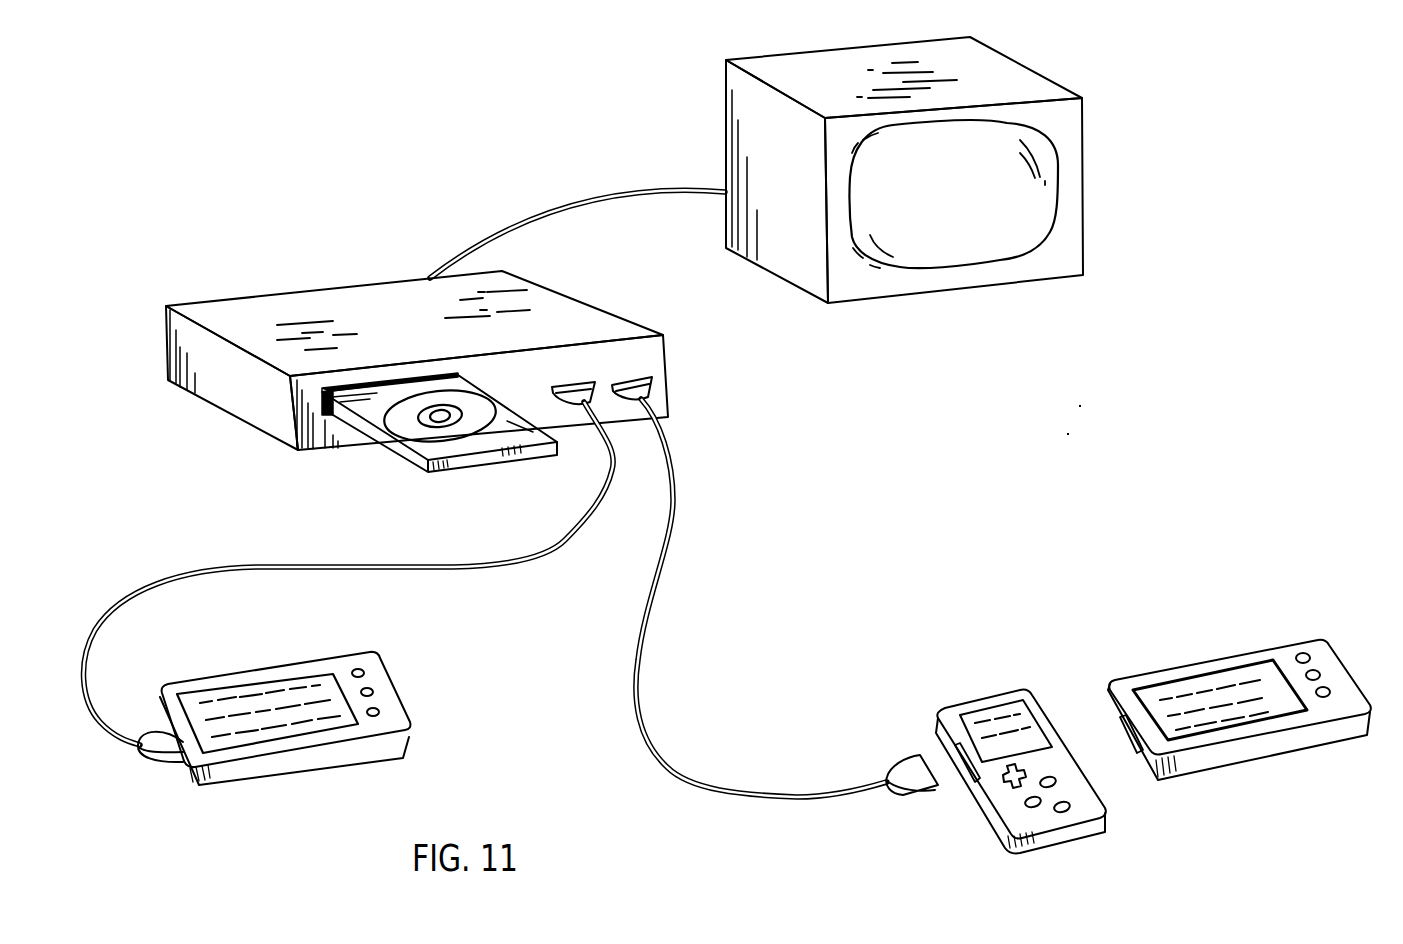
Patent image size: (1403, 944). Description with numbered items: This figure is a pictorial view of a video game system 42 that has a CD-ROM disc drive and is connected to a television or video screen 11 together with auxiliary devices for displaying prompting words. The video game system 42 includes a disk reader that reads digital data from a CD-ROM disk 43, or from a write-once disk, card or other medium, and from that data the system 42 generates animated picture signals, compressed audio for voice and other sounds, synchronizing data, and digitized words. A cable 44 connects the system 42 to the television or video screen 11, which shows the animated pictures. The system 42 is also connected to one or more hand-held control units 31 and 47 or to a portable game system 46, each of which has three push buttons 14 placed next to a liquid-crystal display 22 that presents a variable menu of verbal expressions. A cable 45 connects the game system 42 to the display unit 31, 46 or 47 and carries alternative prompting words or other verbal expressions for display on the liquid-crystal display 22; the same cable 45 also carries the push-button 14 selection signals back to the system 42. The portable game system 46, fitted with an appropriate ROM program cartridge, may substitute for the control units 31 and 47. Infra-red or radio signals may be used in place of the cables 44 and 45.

The television or video screen 11 is at (1038, 200).
The push buttons 14 is at (375, 693).
The liquid-crystal display 22 is at (295, 732).
The hand-held control unit 31 is at (295, 668).
The video game system 42 is at (593, 318).
The CD-ROM disk 43 is at (410, 423).
The cable 44 is at (540, 211).
The cable 45 is at (652, 725).
The portable game system 46 is at (1068, 840).
The hand-held control unit 47 is at (1297, 743).